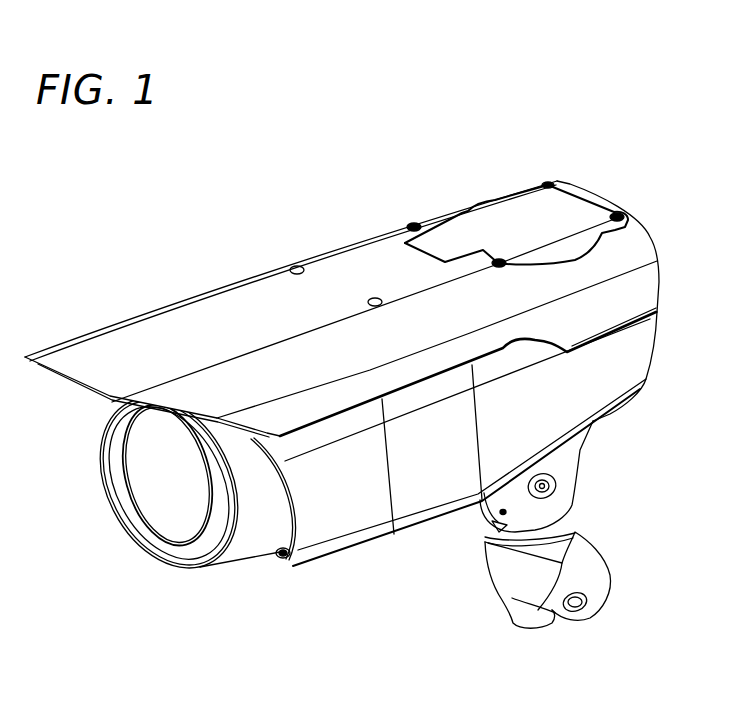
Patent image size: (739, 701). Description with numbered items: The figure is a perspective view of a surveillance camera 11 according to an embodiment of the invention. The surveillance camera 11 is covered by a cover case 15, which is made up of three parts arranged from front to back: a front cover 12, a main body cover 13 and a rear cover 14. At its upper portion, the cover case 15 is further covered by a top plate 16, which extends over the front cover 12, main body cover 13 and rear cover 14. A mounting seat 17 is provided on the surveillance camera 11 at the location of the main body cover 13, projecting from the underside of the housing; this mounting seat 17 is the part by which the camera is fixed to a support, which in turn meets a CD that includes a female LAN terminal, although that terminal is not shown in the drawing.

The surveillance camera 11 is at (265, 211).
The front cover 12 is at (322, 538).
The main body cover 13 is at (434, 498).
The rear cover 14 is at (634, 350).
The cover case 15 is at (373, 556).
The top plate 16 is at (194, 317).
The mounting seat 17 is at (568, 463).